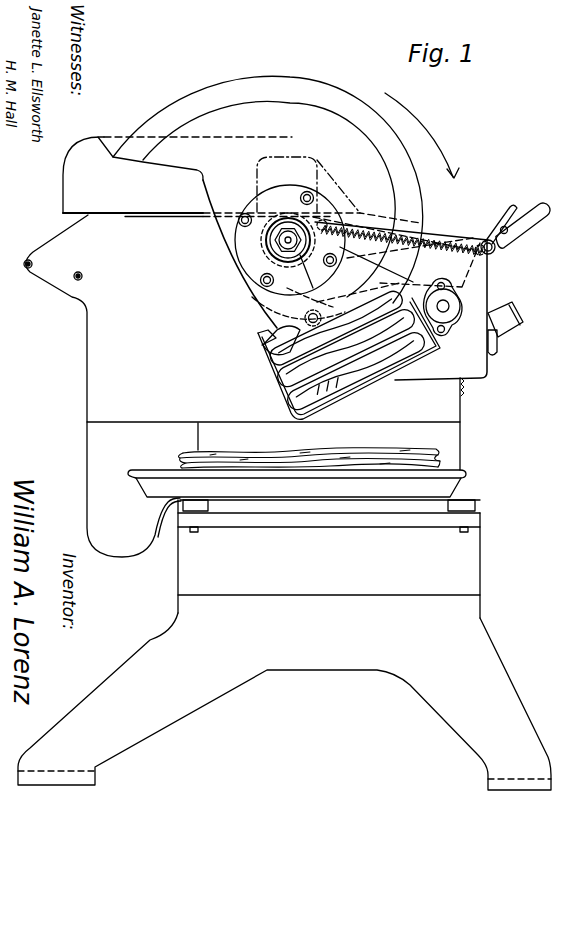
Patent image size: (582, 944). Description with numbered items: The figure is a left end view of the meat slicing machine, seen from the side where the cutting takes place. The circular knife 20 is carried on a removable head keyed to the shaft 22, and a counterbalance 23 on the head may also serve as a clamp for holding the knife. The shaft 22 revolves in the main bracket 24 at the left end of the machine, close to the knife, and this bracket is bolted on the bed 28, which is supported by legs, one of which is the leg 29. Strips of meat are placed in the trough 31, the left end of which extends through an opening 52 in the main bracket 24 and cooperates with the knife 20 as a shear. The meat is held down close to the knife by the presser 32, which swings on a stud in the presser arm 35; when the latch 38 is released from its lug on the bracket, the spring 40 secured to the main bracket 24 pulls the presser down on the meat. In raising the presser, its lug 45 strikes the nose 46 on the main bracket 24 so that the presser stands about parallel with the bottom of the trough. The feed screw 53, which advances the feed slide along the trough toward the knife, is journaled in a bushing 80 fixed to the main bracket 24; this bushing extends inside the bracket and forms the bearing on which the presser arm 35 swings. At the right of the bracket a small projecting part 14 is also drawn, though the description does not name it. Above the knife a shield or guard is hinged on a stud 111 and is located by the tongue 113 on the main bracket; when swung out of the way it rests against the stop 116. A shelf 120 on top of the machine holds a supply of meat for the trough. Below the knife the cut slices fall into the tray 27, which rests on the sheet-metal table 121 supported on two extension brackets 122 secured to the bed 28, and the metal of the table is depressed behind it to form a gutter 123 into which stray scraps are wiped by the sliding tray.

The knife 20 is at (233, 88).
The tongue 113 is at (289, 157).
The shelf 120 is at (105, 145).
The shaft 22 is at (288, 240).
The counterbalance 23 is at (245, 278).
The nose 46 is at (277, 330).
The opening 52 is at (273, 337).
The trough 31 is at (267, 347).
The lug 45 is at (277, 352).
The presser 32 is at (277, 360).
The spring 40 is at (432, 242).
The latch 38 is at (497, 227).
The presser arm 35 is at (507, 248).
The feed screw 53 is at (449, 305).
The bushing 80 is at (448, 323).
The knob 14 is at (508, 323).
The main bracket 24 is at (462, 432).
The tray 27 is at (467, 476).
The table 121 is at (478, 500).
The extension brackets 122 is at (203, 511).
The bed 28 is at (481, 568).
The leg 29 is at (490, 663).
The stop 116 is at (27, 268).
The stud 111 is at (77, 280).
The gutter 123 is at (123, 543).